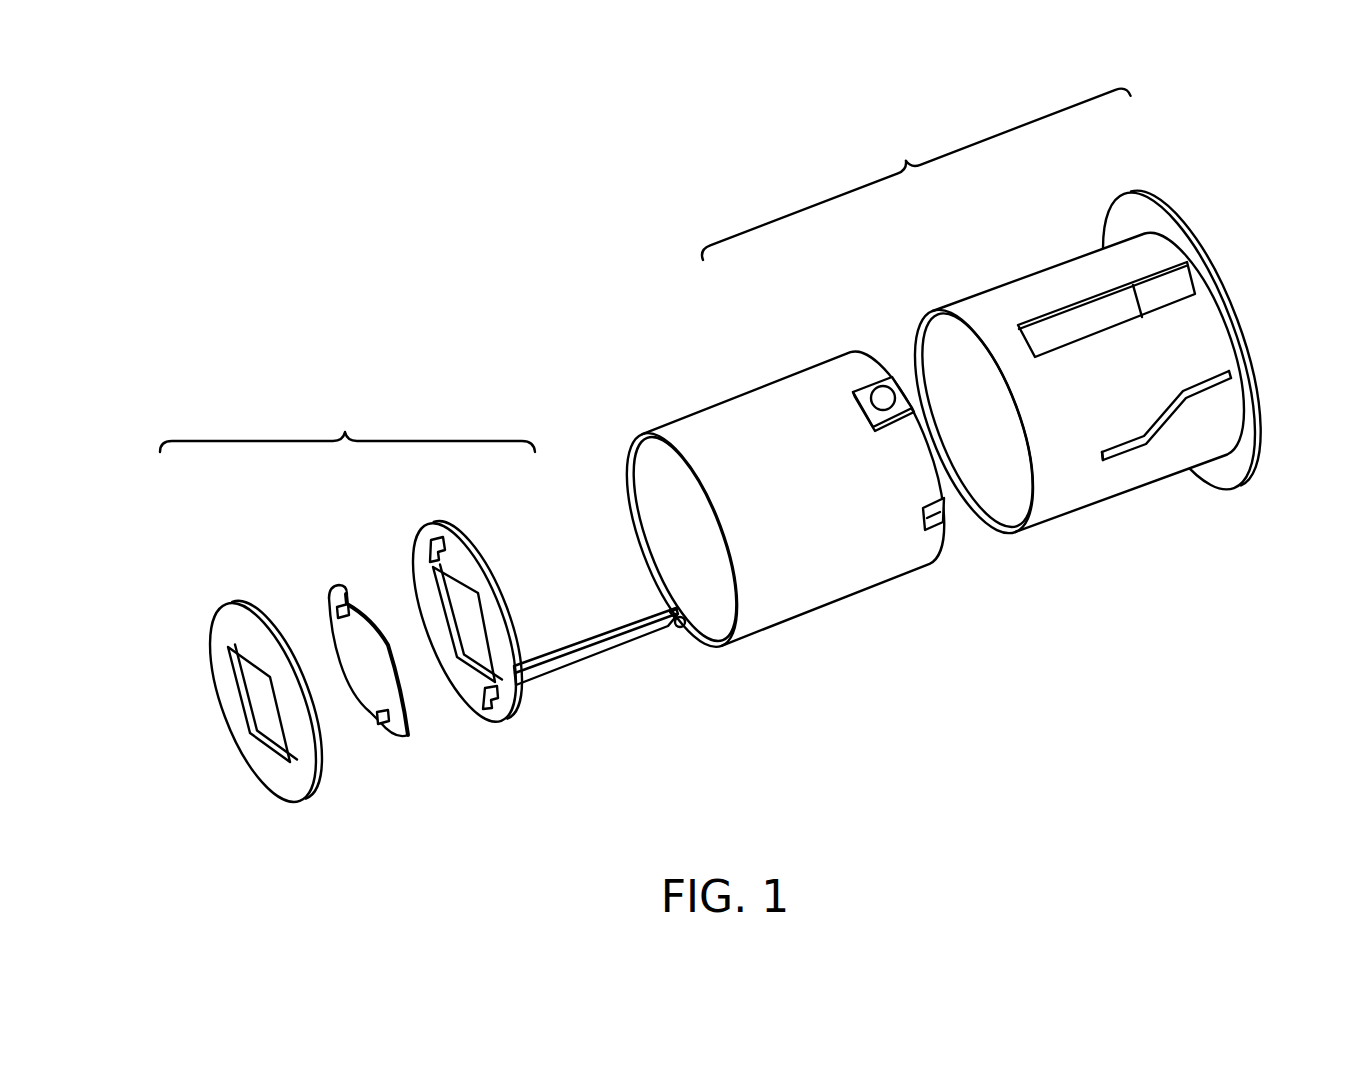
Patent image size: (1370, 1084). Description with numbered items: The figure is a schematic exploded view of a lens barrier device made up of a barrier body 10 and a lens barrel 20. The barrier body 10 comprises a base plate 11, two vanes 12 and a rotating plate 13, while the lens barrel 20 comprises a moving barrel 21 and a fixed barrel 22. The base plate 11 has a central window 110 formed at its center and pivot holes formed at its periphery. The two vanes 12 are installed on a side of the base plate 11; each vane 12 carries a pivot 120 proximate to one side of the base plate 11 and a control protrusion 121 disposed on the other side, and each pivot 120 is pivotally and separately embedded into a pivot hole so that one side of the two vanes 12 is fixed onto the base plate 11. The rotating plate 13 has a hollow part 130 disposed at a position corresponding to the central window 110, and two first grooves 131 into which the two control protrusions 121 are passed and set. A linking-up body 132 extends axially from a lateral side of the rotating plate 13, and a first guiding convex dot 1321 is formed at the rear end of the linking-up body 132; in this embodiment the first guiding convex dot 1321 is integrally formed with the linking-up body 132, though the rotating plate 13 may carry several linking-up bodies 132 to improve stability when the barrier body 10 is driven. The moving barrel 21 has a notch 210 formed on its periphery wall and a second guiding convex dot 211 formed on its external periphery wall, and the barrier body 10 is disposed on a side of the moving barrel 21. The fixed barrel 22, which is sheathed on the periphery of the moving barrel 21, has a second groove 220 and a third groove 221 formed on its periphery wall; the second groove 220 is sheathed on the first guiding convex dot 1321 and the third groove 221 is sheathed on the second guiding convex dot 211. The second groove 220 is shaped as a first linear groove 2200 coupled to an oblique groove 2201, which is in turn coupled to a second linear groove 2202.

The barrier body 10 is at (347, 419).
The base plate 11 is at (222, 584).
The central window 110 is at (267, 720).
The vane 12 is at (344, 564).
The pivot 120 is at (333, 610).
The control protrusion 121 is at (410, 733).
The rotating plate 13 is at (420, 515).
The hollow part 130 is at (457, 598).
The first groove 131 is at (513, 718).
The linking-up body 132 is at (565, 662).
The first guiding convex dot 1321 is at (680, 630).
The lens barrel 20 is at (913, 168).
The moving barrel 21 is at (732, 374).
The notch 210 is at (943, 520).
The second guiding convex dot 211 is at (878, 382).
The fixed barrel 22 is at (1061, 221).
The second groove 220 is at (1244, 362).
The third groove 221 is at (1187, 283).
The first linear groove 2200 is at (1213, 387).
The oblique groove 2201 is at (1167, 425).
The second linear groove 2202 is at (1120, 462).